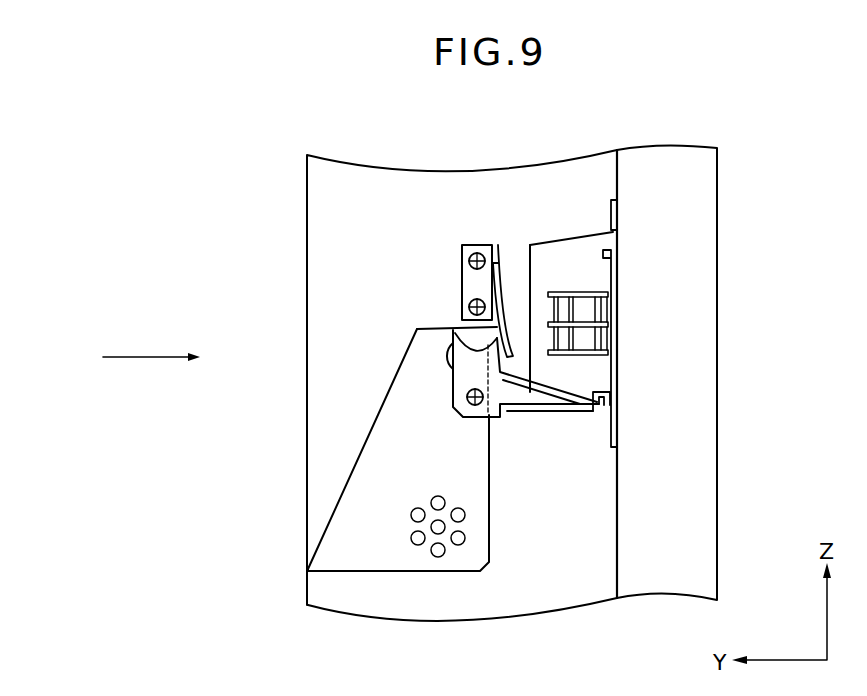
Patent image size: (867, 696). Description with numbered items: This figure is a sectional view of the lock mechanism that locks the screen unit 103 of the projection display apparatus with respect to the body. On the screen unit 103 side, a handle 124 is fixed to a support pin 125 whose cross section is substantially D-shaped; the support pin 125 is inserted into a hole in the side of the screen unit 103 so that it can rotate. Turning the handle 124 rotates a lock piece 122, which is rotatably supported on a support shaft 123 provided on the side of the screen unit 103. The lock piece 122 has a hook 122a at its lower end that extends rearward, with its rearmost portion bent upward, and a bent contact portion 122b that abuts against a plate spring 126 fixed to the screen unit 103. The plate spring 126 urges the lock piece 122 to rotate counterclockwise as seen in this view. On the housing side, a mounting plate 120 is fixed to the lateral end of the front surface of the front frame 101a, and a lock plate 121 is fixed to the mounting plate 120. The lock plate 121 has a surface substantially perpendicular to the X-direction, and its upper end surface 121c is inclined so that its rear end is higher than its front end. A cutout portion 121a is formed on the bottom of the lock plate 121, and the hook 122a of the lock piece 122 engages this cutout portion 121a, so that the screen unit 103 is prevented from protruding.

The front frame 101a is at (680, 323).
The screen unit 103 is at (335, 208).
The mounting plate 120 is at (618, 217).
The lock plate 121 is at (593, 277).
The cutout portion 121a is at (586, 400).
The upper end surface 121c is at (575, 237).
The lock piece 122 is at (528, 398).
The hook 122a is at (598, 403).
The bent contact portion 122b is at (458, 333).
The support shaft 123 is at (485, 410).
The handle 124 is at (358, 520).
The support pin 125 is at (426, 352).
The plate spring 126 is at (499, 268).